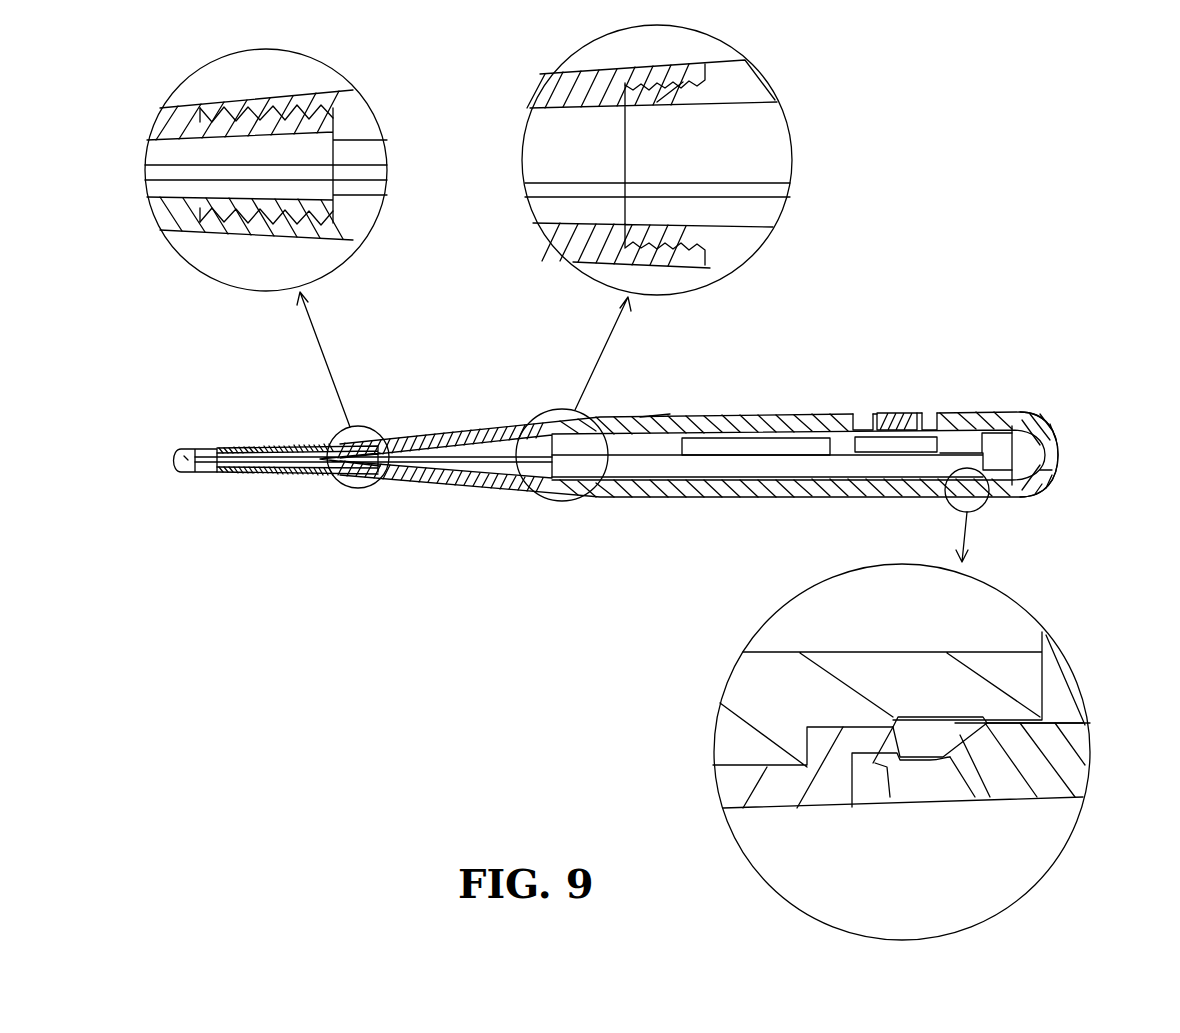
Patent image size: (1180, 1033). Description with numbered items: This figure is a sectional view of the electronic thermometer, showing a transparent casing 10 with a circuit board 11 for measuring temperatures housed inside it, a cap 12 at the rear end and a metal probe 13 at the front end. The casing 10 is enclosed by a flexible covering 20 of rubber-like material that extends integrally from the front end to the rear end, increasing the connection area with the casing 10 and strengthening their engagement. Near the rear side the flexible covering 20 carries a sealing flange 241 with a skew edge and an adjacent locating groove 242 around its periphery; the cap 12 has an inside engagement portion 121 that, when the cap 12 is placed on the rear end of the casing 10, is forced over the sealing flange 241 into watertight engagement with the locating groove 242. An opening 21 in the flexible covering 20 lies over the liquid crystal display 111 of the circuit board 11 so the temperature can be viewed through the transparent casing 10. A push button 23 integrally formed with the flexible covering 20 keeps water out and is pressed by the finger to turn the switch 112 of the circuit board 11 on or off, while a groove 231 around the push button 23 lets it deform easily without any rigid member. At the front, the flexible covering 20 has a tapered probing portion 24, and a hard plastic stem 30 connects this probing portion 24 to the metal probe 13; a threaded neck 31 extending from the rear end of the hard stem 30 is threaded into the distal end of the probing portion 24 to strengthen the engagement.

The casing 10 is at (636, 492).
The circuit board 11 is at (693, 466).
The liquid crystal display 111 is at (752, 445).
The switch 112 is at (888, 443).
The cap 12 is at (1060, 428).
The engagement portion 121 is at (987, 797).
The metal probe 13 is at (178, 478).
The flexible covering 20 is at (653, 418).
The opening 21 is at (845, 412).
The push button 23 is at (902, 410).
The groove 231 is at (928, 410).
The probing portion 24 is at (436, 490).
The sealing flange 241 is at (927, 740).
The locating groove 242 is at (873, 763).
The hard stem 30 is at (288, 478).
The threaded neck 31 is at (353, 489).